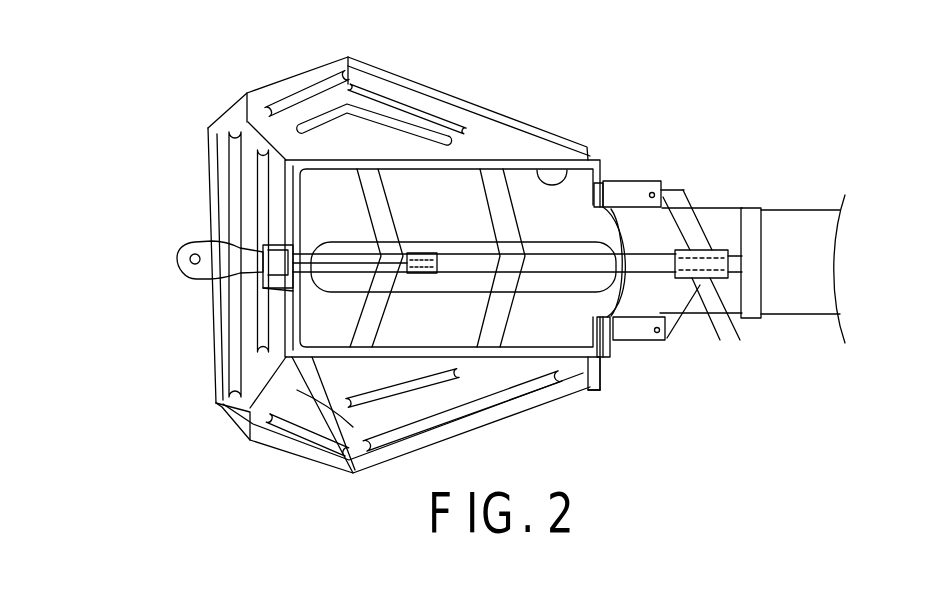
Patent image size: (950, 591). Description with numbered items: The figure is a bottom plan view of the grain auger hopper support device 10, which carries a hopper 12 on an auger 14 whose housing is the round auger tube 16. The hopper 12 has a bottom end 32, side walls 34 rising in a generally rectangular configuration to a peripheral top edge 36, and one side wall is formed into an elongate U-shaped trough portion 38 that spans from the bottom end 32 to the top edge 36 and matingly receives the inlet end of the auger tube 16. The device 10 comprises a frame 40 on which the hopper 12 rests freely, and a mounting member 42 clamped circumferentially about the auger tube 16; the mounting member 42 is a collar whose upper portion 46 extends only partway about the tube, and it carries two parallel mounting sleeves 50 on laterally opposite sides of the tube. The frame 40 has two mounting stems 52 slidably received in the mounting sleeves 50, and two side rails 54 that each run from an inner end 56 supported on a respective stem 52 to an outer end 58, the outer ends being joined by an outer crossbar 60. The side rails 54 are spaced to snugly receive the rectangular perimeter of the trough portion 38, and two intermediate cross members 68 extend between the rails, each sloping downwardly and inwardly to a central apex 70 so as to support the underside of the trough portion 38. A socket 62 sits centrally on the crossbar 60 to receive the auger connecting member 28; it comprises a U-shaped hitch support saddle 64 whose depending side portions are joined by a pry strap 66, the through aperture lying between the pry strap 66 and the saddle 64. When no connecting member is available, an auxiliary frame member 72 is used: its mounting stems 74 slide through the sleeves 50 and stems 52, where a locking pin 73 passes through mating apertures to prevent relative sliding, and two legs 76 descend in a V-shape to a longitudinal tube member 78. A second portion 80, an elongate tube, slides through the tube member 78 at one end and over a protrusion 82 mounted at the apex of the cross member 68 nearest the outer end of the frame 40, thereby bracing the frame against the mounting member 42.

The grain auger hopper support device 10 is at (575, 72).
The hopper 12 is at (278, 101).
The auger 14 is at (805, 229).
The auger tube 16 is at (797, 315).
The connecting member 28 is at (212, 251).
The bottom end 32 is at (318, 207).
The side walls 34 is at (239, 149).
The peripheral top edge 36 is at (392, 75).
The trough portion 38 is at (573, 165).
The frame 40 is at (471, 157).
The mounting member 42 is at (657, 158).
The upper portion 46 is at (693, 227).
The mounting sleeves 50 is at (630, 181).
The mounting stems 52 is at (603, 183).
The side rails 54 is at (315, 158).
The inner end 56 is at (590, 391).
The outer end 58 is at (297, 390).
The outer crossbar 60 is at (603, 357).
The socket 62 is at (247, 298).
The hitch support saddle 64 is at (280, 290).
The pry strap 66 is at (262, 288).
The intermediate cross members 68 is at (507, 317).
The central apex 70 is at (383, 260).
The auxiliary frame member 72 is at (727, 230).
The locking pin 73 is at (660, 333).
The mounting stems 74 is at (658, 233).
The legs 76 is at (725, 195).
The tube member 78 is at (710, 282).
The second portion 80 is at (683, 317).
The protrusion 82 is at (420, 253).